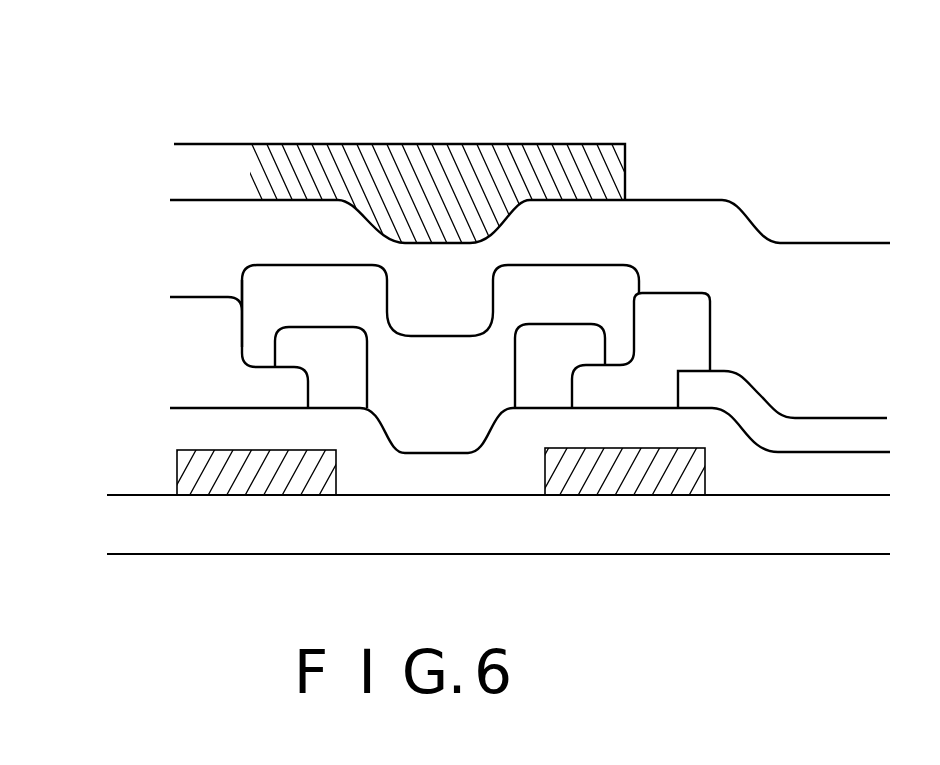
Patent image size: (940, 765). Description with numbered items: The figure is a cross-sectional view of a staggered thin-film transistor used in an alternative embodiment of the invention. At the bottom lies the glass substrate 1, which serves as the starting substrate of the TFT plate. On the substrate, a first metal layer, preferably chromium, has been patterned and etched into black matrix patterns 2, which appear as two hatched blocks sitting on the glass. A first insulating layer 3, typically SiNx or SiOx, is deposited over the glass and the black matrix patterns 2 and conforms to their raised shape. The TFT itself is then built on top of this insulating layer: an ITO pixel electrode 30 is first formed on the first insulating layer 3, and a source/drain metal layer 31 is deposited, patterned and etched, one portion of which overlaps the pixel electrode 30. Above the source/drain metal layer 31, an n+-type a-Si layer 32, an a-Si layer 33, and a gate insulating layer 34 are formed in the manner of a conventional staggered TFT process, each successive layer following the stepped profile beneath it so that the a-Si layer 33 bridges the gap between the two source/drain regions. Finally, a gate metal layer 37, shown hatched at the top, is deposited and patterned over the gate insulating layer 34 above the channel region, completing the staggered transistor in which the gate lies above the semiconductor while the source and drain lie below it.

The glass substrate 1 is at (660, 532).
The black matrix patterns 2 is at (190, 482).
The first insulating layer 3 is at (703, 423).
The ITO pixel electrode 30 is at (763, 418).
The source/drain metal layer 31 is at (273, 390).
The n+-type a-Si layer 32 is at (317, 340).
The a-Si layer 33 is at (487, 362).
The gate insulating layer 34 is at (433, 302).
The gate metal layer 37 is at (437, 170).